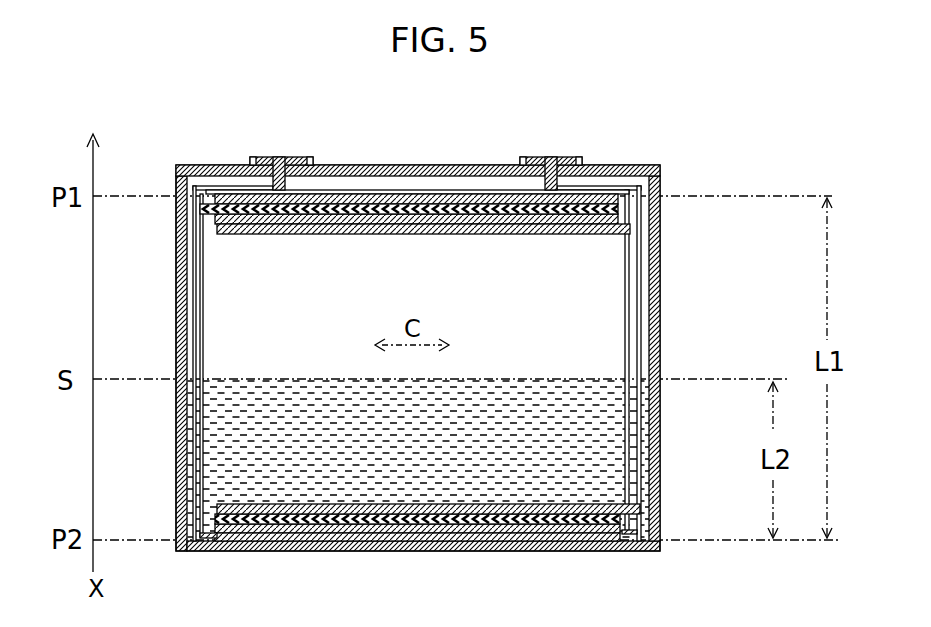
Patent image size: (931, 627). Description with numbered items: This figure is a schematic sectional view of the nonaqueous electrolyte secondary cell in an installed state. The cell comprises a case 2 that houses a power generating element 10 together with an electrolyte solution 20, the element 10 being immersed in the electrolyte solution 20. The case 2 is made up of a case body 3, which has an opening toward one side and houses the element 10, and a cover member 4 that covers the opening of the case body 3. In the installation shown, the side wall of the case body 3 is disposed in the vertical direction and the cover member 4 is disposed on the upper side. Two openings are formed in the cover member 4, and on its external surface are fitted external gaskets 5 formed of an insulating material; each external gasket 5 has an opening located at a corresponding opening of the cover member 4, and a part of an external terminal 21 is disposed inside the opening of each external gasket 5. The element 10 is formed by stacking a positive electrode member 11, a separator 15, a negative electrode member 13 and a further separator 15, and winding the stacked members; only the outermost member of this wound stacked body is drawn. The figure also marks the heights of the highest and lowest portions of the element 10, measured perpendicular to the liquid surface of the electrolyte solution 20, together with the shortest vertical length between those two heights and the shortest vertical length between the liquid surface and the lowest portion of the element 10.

The case 2 is at (660, 290).
The case body 3 is at (654, 347).
The cover member 4 is at (645, 165).
The external gasket 5 is at (250, 160).
The element 10 is at (427, 194).
The positive electrode member 11 is at (632, 229).
The negative electrode member 13 is at (194, 194).
The separator 15 is at (378, 214).
The electrolyte solution 20 is at (660, 425).
The external terminal 21 is at (280, 157).